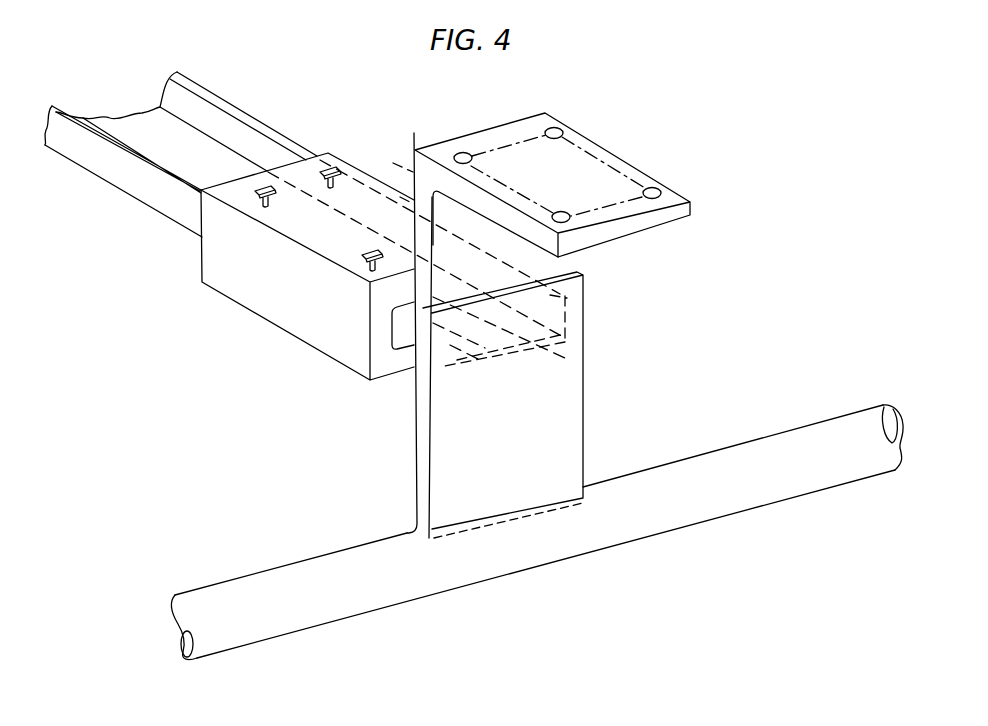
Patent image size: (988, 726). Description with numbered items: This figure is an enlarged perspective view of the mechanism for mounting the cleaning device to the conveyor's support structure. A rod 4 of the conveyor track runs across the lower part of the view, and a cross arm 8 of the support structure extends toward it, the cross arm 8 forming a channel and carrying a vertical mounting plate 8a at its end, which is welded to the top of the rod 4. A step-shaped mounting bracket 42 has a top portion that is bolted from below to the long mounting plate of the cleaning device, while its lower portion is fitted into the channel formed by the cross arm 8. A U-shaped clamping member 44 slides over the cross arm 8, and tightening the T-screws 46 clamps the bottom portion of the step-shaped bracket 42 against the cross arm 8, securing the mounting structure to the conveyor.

The rod 4 is at (636, 541).
The cross arm 8 is at (237, 110).
The vertical mounting plate 8a is at (587, 398).
The step-shaped mounting bracket 42 is at (617, 155).
The U-shaped clamping member 44 is at (369, 346).
The T-screws 46 is at (336, 166).